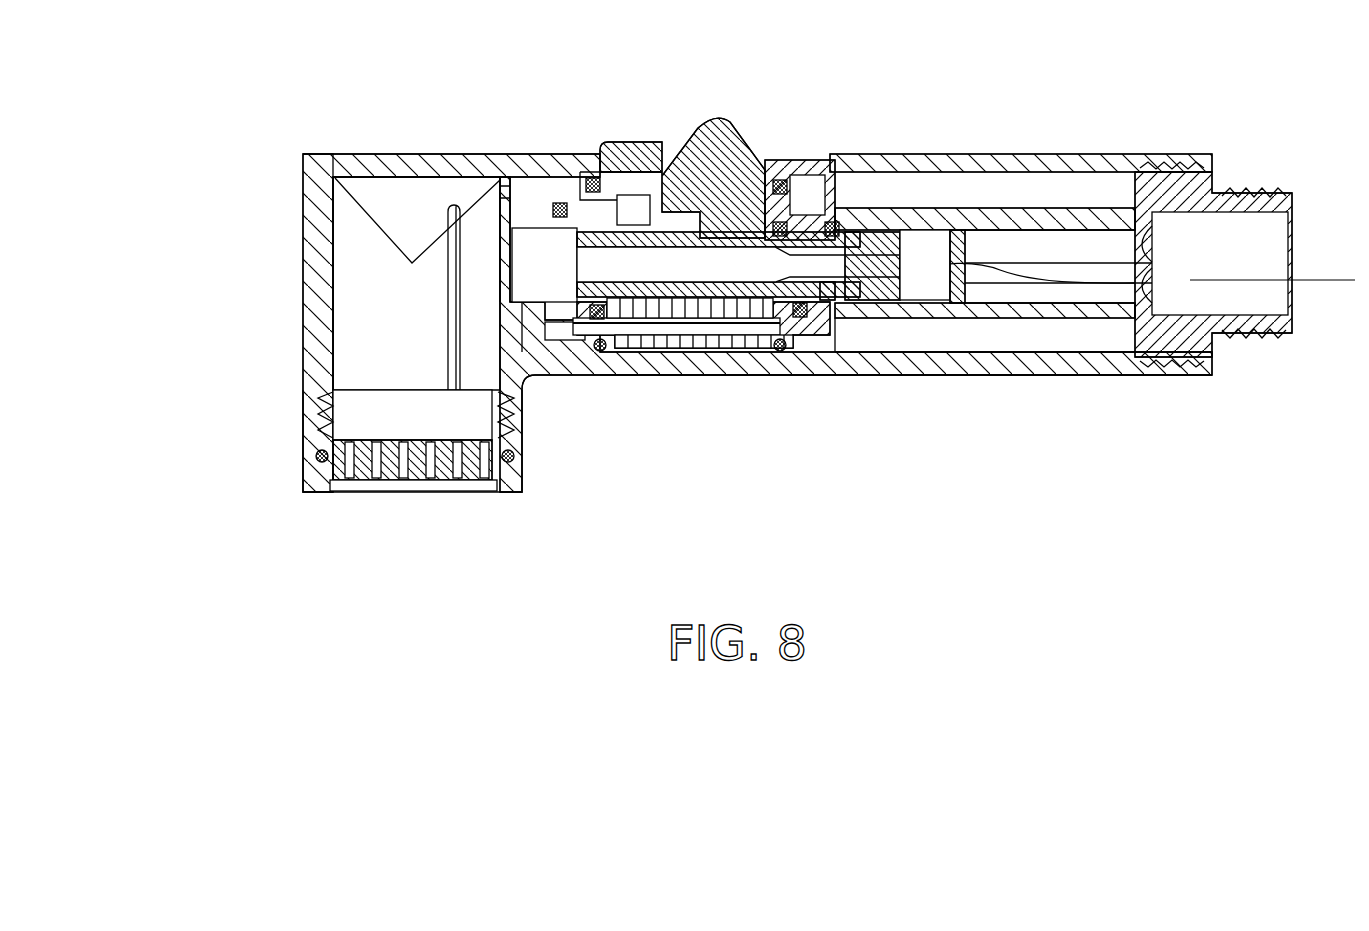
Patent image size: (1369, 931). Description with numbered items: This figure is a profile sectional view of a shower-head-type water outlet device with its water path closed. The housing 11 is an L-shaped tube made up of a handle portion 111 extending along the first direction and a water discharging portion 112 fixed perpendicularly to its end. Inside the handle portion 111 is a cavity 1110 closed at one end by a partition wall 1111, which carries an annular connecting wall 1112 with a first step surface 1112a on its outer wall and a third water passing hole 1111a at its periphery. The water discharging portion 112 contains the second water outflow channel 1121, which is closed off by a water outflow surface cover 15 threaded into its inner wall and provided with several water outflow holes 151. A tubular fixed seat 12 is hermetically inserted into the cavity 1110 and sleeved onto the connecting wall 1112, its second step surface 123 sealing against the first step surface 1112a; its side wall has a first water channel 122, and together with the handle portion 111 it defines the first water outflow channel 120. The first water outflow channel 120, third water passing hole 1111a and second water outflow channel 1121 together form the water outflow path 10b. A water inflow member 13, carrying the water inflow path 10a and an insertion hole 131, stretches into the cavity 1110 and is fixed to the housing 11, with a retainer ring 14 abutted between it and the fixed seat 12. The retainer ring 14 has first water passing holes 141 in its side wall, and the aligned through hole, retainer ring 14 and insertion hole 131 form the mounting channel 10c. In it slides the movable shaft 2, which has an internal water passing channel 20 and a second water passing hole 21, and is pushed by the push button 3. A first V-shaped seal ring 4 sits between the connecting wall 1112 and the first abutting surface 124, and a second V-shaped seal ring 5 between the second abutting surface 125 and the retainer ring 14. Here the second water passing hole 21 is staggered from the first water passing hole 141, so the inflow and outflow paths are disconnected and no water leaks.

The housing 11 is at (366, 165).
The third water passing hole 1111a is at (507, 192).
The partition wall 1111 is at (507, 197).
The second step surface 123 is at (572, 212).
The first abutting surface 124 is at (602, 230).
The push button 3 is at (695, 137).
The second abutting surface 125 is at (775, 165).
The retainer ring 14 is at (825, 160).
The second water passing hole 21 is at (870, 235).
The insertion hole 131 is at (935, 248).
The water inflow path 10a is at (1077, 248).
The water inflow member 13 is at (1178, 192).
The mounting channel 10c is at (305, 162).
The water outflow path 10b is at (185, 270).
The first water outflow channel 120 is at (547, 267).
The second water outflow channel 1121 is at (367, 325).
The water discharging portion 112 is at (303, 368).
The connecting wall 1112 is at (523, 307).
The first step surface 1112a is at (547, 320).
The first V-shaped seal ring 4 is at (608, 300).
The fixed seat 12 is at (657, 338).
The first water channel 122 is at (773, 328).
The second V-shaped seal ring 5 is at (800, 310).
The first water passing hole 141 is at (827, 290).
The movable shaft 2 is at (897, 297).
The handle portion 111 is at (1028, 362).
The cavity 1110 is at (1103, 343).
The water outflow holes 151 is at (392, 478).
The water outflow surface cover 15 is at (422, 470).
The water passing channel 20 is at (707, 255).